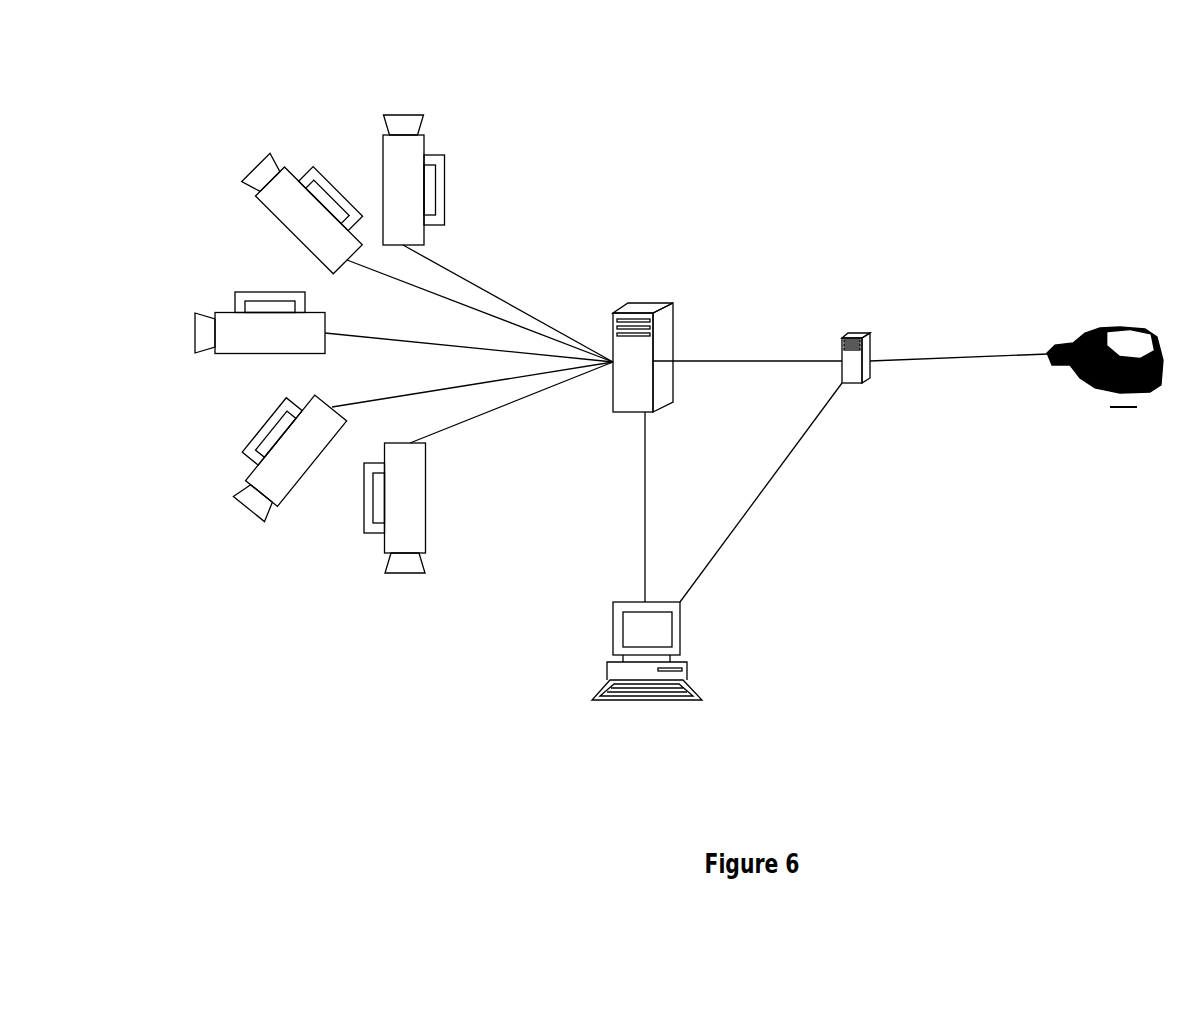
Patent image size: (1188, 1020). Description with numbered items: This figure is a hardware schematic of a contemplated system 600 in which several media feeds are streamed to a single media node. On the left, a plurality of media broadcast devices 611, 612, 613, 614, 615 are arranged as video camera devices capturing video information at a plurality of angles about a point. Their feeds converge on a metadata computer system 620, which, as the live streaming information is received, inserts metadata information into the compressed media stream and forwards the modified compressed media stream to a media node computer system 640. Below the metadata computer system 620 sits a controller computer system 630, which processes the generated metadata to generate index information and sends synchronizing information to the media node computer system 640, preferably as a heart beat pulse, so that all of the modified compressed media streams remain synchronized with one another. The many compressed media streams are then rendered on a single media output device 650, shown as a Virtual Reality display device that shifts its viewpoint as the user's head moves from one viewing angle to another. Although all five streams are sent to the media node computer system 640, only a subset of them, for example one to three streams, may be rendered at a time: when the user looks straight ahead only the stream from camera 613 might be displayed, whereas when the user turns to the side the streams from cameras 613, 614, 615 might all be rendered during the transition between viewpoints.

The system 600 is at (208, 105).
The media broadcast device 611 is at (410, 191).
The media broadcast device 612 is at (308, 205).
The media broadcast device 613 is at (260, 332).
The media broadcast device 614 is at (282, 462).
The media broadcast device 615 is at (395, 519).
The metadata computer system 620 is at (635, 368).
The controller computer system 630 is at (641, 663).
The media node computer system 640 is at (857, 370).
The media output device 650 is at (1105, 379).